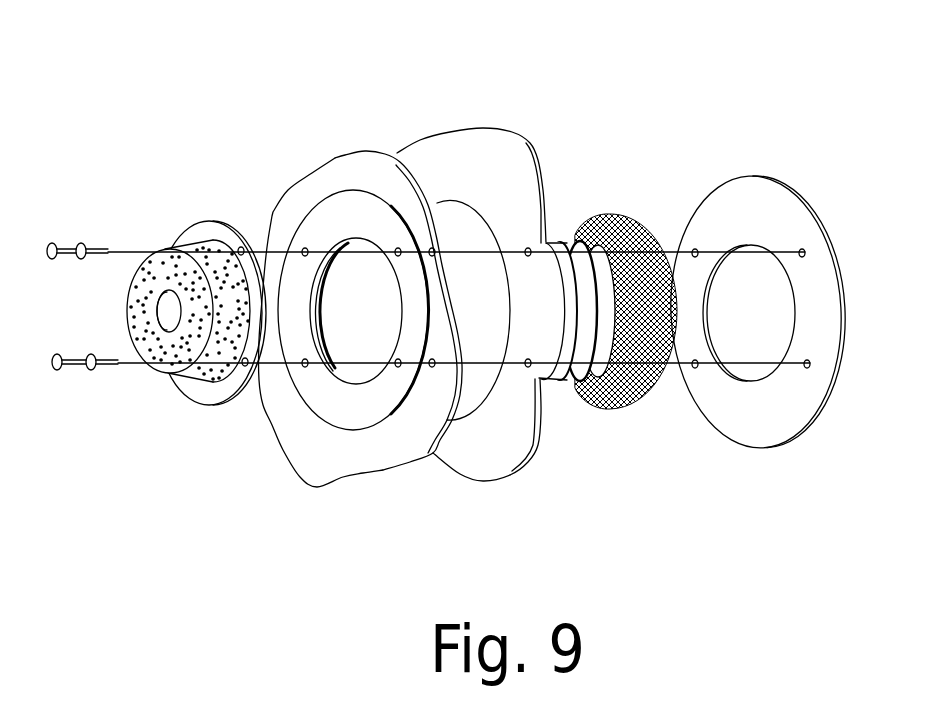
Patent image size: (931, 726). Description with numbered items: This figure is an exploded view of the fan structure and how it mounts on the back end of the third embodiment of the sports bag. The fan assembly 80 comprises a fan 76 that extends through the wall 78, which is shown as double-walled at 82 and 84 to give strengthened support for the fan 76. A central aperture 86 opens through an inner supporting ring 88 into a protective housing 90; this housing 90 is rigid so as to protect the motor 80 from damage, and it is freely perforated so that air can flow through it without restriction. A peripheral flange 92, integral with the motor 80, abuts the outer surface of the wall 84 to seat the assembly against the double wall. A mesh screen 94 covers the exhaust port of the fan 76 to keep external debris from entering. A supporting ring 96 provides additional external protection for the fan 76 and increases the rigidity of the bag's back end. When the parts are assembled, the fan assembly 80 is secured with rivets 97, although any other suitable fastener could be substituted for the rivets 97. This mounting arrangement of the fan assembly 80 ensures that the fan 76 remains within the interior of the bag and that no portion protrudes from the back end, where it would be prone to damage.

The fan 76 is at (550, 375).
The wall 78 is at (350, 126).
The fan assembly 80 is at (453, 128).
The double wall (inner wall) 82 is at (308, 467).
The double wall (outer wall) 84 is at (490, 457).
The central aperture 86 is at (367, 403).
The inner supporting ring 88 is at (353, 207).
The protective housing 90 is at (217, 230).
The peripheral flange 92 is at (620, 410).
The mesh screen 94 is at (612, 213).
The supporting ring 96 is at (751, 193).
The rivets 97 is at (67, 360).